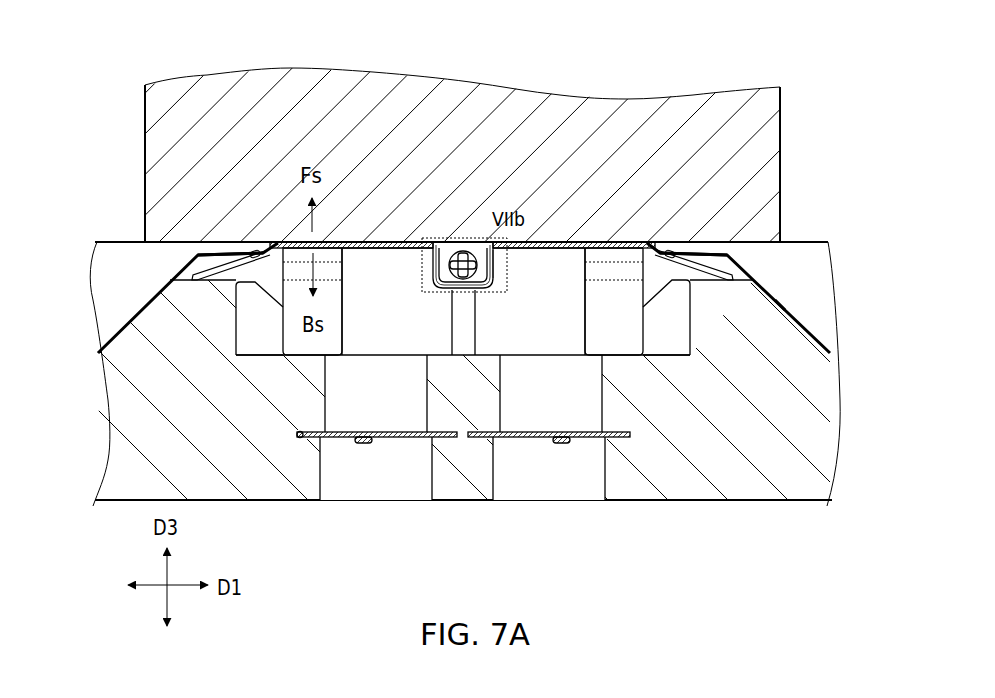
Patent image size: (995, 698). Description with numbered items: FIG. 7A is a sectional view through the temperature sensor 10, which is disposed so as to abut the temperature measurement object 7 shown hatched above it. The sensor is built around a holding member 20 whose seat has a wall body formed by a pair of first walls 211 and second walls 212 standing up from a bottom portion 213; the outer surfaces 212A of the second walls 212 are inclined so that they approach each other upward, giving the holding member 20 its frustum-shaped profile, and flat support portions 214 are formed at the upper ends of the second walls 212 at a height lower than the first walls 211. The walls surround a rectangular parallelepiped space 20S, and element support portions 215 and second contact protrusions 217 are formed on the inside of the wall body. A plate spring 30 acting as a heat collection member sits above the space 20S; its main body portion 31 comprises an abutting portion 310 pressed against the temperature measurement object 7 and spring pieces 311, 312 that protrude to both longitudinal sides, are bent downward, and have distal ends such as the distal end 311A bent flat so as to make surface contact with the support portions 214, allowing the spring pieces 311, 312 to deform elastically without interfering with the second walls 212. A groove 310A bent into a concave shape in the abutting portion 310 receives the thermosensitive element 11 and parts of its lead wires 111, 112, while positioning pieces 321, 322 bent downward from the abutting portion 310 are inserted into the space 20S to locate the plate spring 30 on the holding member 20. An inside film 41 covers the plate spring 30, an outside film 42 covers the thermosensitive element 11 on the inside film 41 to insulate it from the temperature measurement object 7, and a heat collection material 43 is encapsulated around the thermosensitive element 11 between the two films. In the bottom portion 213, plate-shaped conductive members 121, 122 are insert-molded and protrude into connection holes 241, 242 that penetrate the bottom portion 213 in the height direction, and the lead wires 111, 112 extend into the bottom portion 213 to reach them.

The temperature measurement object 7 is at (743, 91).
The temperature sensor 10 is at (98, 236).
The thermosensitive element 11 is at (465, 250).
The holding member 20 is at (757, 505).
The space 20S is at (430, 333).
The plate spring 30 is at (608, 240).
The main body portion 31 is at (400, 240).
The inside film 41 is at (117, 352).
The outside film 42 is at (125, 240).
The heat collection material 43 is at (478, 238).
The lead wire 111 is at (367, 444).
The lead wire 112 is at (567, 444).
The conductive member 121 is at (312, 430).
The conductive member 122 is at (590, 430).
The first wall 211 is at (398, 285).
The second wall 212 is at (270, 243).
The outer surface 212A is at (788, 312).
The bottom portion 213 is at (668, 503).
The support portion 214 is at (125, 240).
The element support portion 215 is at (478, 340).
The second contact protrusion 217 is at (247, 318).
The connection hole 241 is at (343, 490).
The connection hole 242 is at (527, 490).
The abutting portion 310 is at (385, 242).
The groove 310A is at (506, 240).
The spring piece 311 is at (232, 245).
The distal end 311A is at (200, 245).
The spring piece 312 is at (710, 280).
The positioning piece 321 is at (270, 342).
The positioning piece 322 is at (622, 357).